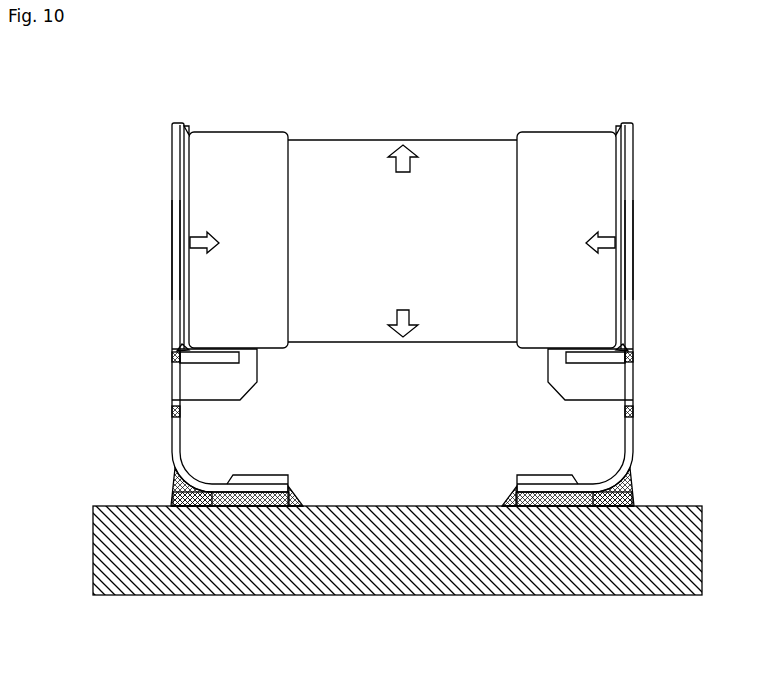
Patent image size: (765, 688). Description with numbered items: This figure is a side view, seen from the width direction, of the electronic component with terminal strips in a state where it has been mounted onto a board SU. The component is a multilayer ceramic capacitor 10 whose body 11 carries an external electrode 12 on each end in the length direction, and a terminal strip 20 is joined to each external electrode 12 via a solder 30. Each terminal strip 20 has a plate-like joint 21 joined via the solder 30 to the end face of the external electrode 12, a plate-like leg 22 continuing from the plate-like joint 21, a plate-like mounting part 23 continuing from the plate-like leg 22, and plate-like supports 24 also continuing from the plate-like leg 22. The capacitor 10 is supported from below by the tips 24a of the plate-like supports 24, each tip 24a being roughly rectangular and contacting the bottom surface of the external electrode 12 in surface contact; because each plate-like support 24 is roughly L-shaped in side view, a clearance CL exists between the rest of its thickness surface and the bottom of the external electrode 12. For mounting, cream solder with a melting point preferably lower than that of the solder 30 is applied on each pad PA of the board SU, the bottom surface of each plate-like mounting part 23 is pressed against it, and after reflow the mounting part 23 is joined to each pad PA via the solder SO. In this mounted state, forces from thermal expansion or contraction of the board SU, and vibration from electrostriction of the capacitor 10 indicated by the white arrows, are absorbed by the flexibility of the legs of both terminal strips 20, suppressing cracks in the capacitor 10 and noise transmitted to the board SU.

The multilayer ceramic capacitor 10 is at (348, 140).
The component body 11 is at (432, 155).
The external electrode 12 is at (240, 143).
The terminal strip 20 is at (172, 179).
The plate-like joint 21 is at (179, 239).
The plate-like leg 22 is at (173, 427).
The plate-like mounting part 23 is at (265, 483).
The plate-like support 24 is at (177, 378).
The tip 24a is at (258, 351).
The solder 30 is at (183, 123).
The solder SO is at (174, 484).
The board SU is at (392, 596).
The pad PA is at (238, 507).
The clearance CL is at (208, 353).